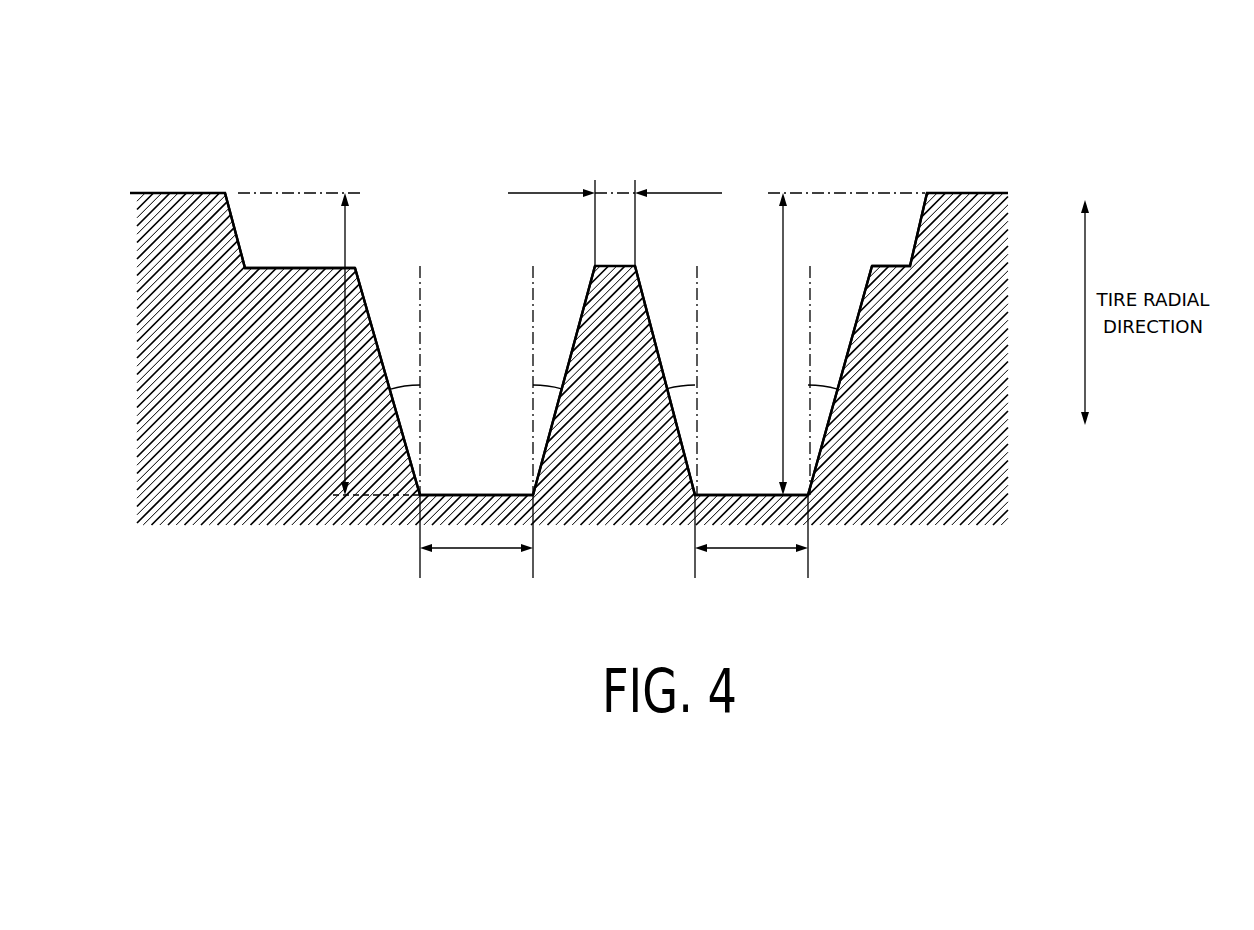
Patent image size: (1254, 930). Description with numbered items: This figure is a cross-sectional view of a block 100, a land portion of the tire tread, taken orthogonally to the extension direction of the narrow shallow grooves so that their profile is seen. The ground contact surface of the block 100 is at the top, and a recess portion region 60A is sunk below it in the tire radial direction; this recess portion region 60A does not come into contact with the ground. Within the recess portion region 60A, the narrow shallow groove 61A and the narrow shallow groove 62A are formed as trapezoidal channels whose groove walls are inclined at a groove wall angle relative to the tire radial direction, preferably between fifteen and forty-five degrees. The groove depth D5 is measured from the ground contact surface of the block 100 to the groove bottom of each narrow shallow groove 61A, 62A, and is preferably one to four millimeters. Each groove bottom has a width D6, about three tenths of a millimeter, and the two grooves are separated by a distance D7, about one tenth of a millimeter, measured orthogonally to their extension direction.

The block 100 is at (774, 75).
The recess portion region 60A is at (298, 268).
The narrow shallow groove 61A is at (745, 268).
The narrow shallow groove 62A is at (470, 268).
The groove depth D5 is at (347, 222).
The width of the groove bottom D6 is at (478, 558).
The distance D7 is at (615, 190).